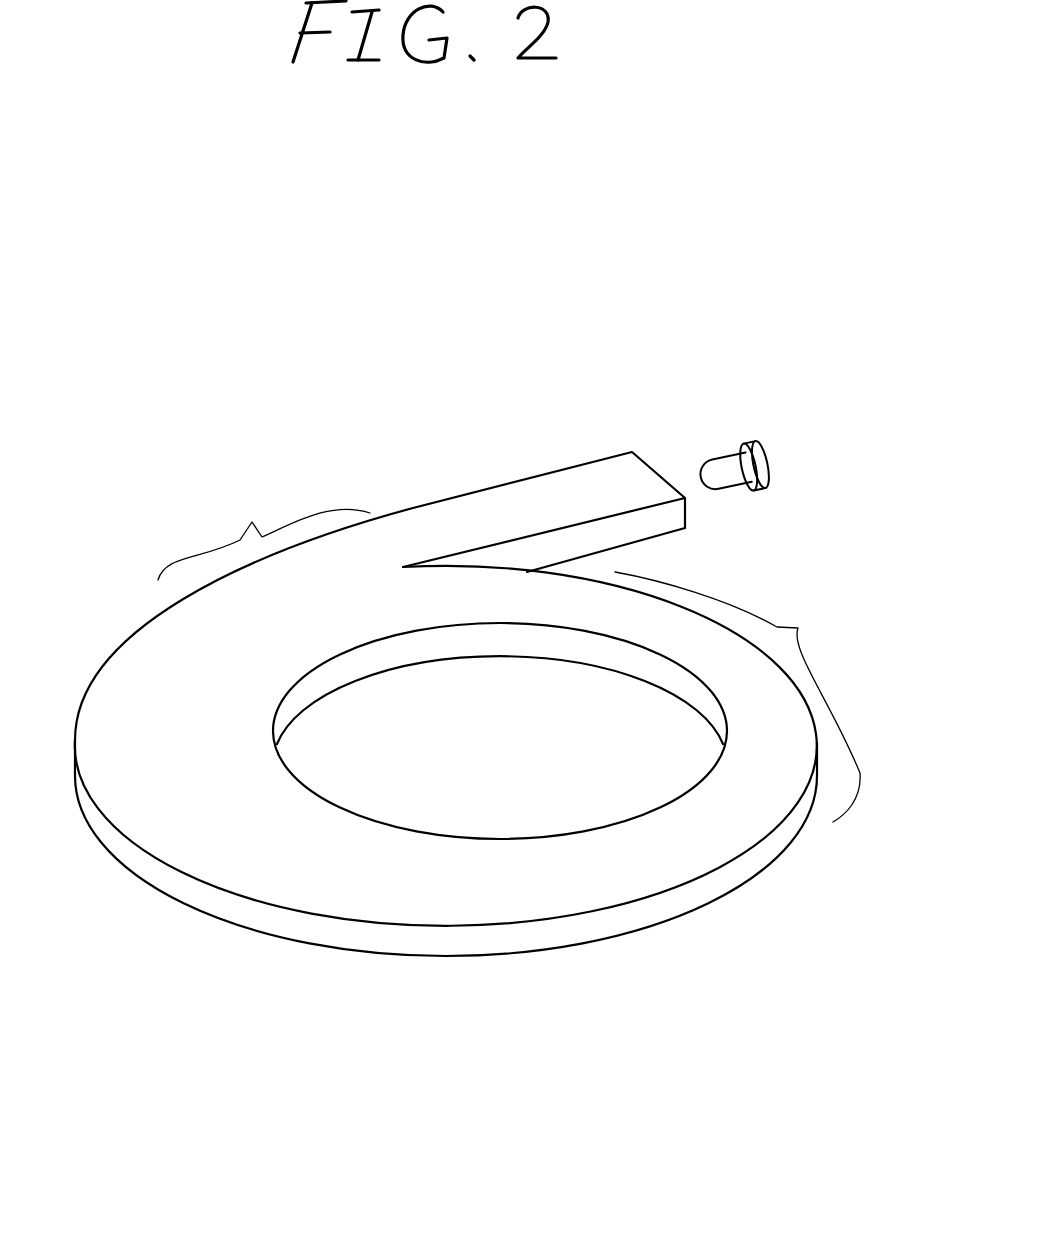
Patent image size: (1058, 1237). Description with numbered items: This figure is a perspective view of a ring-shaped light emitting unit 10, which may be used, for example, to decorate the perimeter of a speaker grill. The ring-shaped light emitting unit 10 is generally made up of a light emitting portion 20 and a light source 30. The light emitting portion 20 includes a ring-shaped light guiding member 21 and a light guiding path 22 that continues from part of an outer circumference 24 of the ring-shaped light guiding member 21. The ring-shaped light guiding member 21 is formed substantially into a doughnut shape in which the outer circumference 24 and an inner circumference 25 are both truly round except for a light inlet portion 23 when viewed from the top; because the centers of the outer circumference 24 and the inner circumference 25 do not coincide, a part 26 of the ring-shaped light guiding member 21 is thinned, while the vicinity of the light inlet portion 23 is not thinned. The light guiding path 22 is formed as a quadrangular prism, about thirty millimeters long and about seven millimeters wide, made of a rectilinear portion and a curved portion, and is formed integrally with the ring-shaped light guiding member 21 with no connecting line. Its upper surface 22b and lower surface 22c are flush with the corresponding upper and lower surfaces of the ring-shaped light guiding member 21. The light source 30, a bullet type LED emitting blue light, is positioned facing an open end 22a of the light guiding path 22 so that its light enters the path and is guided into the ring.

The ring-shaped light emitting unit 10 is at (433, 343).
The light emitting portion 20 is at (535, 963).
The ring-shaped light guiding member 21 is at (145, 685).
The light guiding path 22 is at (508, 484).
The open end 22a is at (687, 511).
The upper surface 22b is at (580, 488).
The lower surface 22c is at (673, 533).
The light inlet portion 23 is at (264, 528).
The outer circumference 24 is at (313, 927).
The inner circumference 25 is at (447, 640).
The thinned part 26 is at (737, 697).
The light source 30 is at (737, 433).